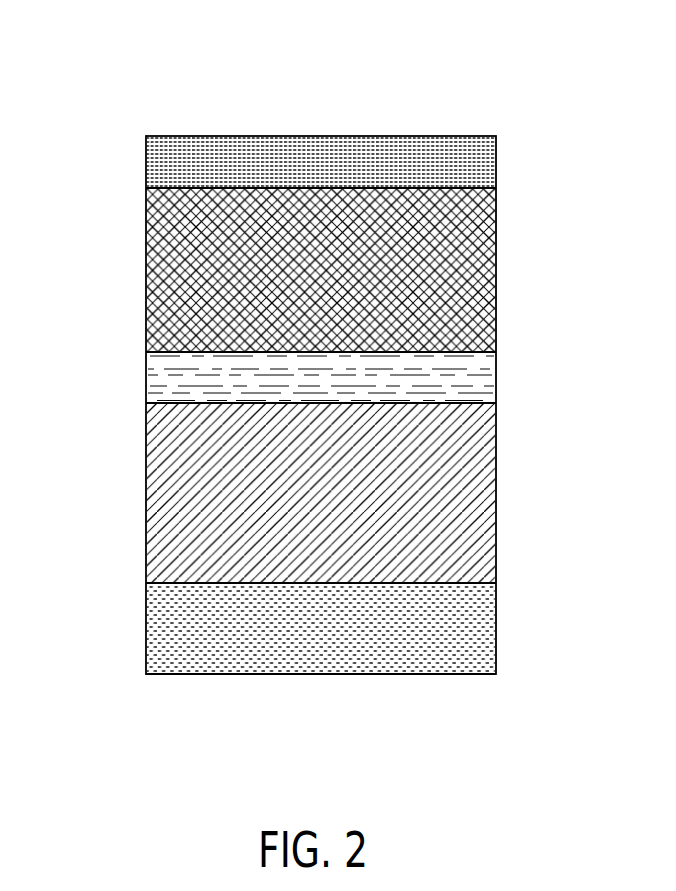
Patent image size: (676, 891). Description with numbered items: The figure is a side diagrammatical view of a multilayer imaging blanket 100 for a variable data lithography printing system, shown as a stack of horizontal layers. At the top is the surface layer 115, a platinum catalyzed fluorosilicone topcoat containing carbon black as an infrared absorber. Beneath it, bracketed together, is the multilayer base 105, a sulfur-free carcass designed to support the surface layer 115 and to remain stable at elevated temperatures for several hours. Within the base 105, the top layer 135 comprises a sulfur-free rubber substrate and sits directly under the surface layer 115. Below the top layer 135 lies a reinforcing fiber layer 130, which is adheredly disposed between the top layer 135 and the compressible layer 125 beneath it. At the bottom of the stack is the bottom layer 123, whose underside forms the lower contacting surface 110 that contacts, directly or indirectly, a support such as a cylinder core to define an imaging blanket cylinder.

The imaging blanket 100 is at (236, 109).
The multilayer base 105 is at (138, 193).
The lower contacting surface 110 is at (318, 708).
The surface layer 115 is at (483, 164).
The bottom layer 123 is at (483, 626).
The compressible layer 125 is at (483, 487).
The reinforcing fiber layer 130 is at (483, 379).
The top layer 135 is at (483, 279).